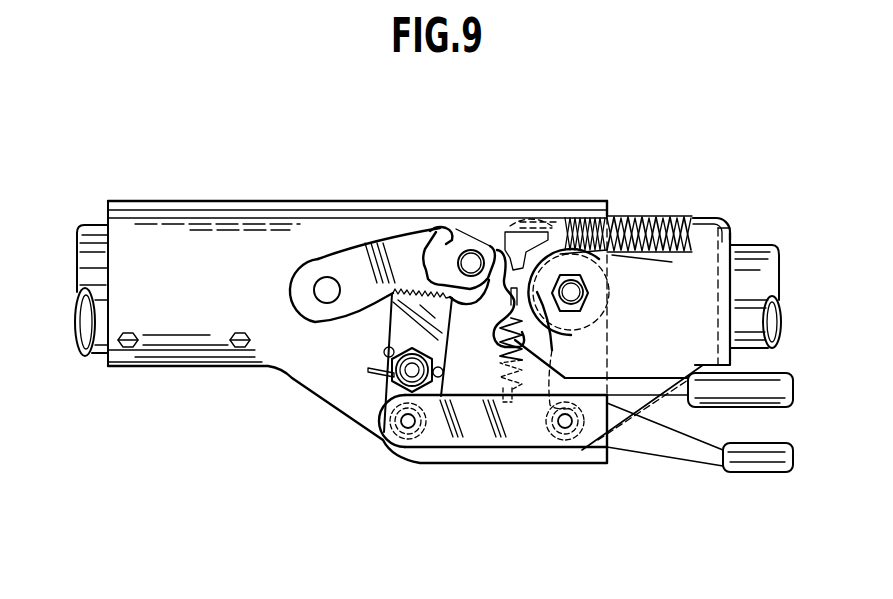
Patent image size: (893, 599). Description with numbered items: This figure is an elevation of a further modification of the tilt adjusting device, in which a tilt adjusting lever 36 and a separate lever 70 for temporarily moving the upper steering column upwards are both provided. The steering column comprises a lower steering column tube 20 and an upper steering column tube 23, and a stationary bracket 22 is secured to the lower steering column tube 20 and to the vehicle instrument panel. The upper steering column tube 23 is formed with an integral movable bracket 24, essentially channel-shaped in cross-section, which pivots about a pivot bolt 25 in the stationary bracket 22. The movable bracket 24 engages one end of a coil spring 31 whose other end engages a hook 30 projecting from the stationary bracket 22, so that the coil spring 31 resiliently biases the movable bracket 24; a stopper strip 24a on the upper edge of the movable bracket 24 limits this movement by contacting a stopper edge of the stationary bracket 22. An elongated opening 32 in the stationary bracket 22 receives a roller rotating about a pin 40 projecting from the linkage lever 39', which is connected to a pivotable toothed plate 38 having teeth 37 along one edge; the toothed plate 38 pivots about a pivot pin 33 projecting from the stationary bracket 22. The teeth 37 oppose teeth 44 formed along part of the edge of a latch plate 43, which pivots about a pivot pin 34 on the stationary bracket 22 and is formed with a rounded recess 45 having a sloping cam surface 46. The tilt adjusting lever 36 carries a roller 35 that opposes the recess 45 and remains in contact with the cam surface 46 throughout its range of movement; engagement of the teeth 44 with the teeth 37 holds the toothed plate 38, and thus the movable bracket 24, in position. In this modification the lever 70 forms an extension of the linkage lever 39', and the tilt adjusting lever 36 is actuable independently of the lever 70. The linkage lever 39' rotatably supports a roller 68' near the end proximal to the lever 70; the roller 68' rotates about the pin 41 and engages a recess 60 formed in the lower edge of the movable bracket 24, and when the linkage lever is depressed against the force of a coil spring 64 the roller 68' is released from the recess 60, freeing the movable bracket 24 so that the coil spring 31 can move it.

The lower steering column tube 20 is at (106, 253).
The stationary bracket 22 is at (277, 373).
The upper steering column tube 23 is at (760, 257).
The movable bracket 24 is at (712, 258).
The stopper strip 24a is at (613, 253).
The pivot bolt 25 is at (585, 293).
The hook 30 is at (540, 247).
The coil spring 31 is at (670, 215).
The elongated opening 32 is at (464, 448).
The pivot pin 33 is at (412, 370).
The pivot pin 34 is at (313, 287).
The roller 35 is at (473, 250).
The tilt adjusting lever 36 is at (680, 392).
The teeth 37 is at (393, 323).
The toothed plate 38 is at (380, 410).
The linkage lever 39' is at (513, 487).
The pin 40 is at (408, 418).
The connector pin 41 is at (563, 437).
The latch plate 43 is at (372, 240).
The teeth 44 is at (420, 290).
The rounded recess 45 is at (437, 260).
The sloping cam surface 46 is at (481, 246).
The recess 60 is at (601, 349).
The coil spring 64 is at (508, 332).
The roller 68' is at (639, 435).
The lever 70 is at (712, 462).